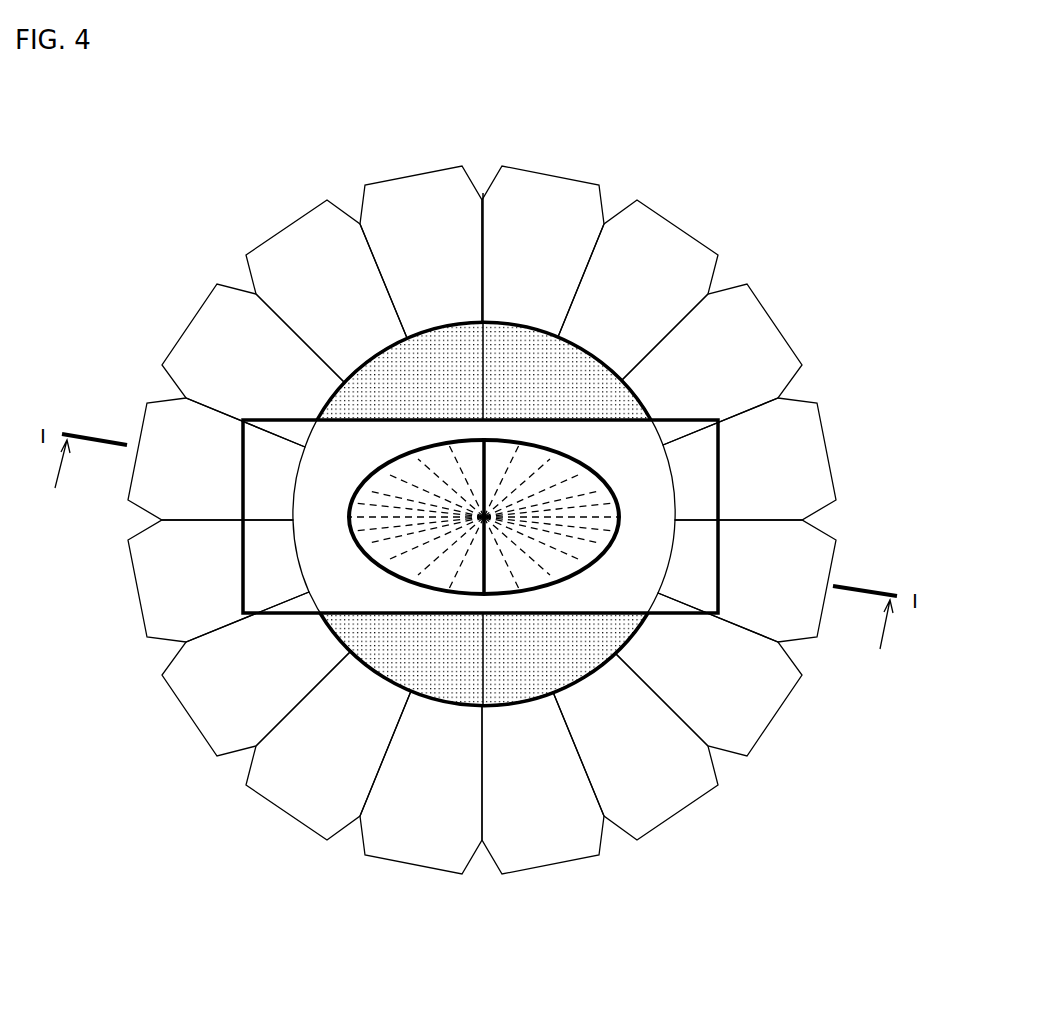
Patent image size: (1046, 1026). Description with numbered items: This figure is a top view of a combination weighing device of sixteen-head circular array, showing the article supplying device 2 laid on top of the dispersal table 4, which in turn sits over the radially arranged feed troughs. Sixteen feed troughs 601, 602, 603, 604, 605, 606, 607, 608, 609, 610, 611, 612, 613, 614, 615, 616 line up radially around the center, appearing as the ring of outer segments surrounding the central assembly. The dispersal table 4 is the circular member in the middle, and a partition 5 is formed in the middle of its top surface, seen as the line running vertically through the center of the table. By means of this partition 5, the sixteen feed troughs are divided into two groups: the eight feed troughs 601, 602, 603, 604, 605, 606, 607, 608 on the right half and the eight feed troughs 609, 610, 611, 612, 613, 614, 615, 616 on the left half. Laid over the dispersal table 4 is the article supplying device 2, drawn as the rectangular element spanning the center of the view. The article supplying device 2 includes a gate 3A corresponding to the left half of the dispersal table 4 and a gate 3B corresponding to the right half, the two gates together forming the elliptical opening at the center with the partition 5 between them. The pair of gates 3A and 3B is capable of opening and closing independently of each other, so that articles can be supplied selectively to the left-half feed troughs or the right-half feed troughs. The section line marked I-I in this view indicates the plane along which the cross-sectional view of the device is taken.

The article supplying device 2 is at (675, 463).
The gate 3A is at (360, 490).
The gate 3B is at (620, 505).
The dispersal table 4 is at (588, 388).
The partition 5 is at (487, 372).
The feed trough 601 is at (514, 259).
The feed trough 602 is at (610, 295).
The feed trough 603 is at (686, 369).
The feed trough 604 is at (737, 487).
The feed trough 605 is at (739, 584).
The feed trough 606 is at (695, 680).
The feed trough 607 is at (610, 770).
The feed trough 608 is at (514, 822).
The feed trough 609 is at (404, 822).
The feed trough 610 is at (297, 757).
The feed trough 611 is at (209, 690).
The feed trough 612 is at (155, 584).
The feed trough 613 is at (155, 477).
The feed trough 614 is at (209, 367).
The feed trough 615 is at (297, 294).
The feed trough 616 is at (404, 249).